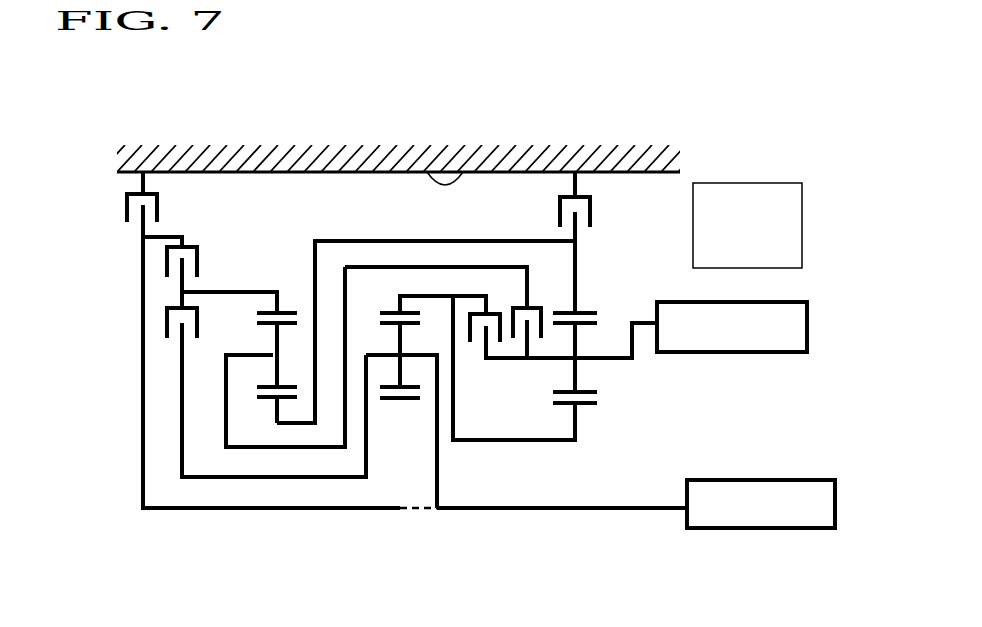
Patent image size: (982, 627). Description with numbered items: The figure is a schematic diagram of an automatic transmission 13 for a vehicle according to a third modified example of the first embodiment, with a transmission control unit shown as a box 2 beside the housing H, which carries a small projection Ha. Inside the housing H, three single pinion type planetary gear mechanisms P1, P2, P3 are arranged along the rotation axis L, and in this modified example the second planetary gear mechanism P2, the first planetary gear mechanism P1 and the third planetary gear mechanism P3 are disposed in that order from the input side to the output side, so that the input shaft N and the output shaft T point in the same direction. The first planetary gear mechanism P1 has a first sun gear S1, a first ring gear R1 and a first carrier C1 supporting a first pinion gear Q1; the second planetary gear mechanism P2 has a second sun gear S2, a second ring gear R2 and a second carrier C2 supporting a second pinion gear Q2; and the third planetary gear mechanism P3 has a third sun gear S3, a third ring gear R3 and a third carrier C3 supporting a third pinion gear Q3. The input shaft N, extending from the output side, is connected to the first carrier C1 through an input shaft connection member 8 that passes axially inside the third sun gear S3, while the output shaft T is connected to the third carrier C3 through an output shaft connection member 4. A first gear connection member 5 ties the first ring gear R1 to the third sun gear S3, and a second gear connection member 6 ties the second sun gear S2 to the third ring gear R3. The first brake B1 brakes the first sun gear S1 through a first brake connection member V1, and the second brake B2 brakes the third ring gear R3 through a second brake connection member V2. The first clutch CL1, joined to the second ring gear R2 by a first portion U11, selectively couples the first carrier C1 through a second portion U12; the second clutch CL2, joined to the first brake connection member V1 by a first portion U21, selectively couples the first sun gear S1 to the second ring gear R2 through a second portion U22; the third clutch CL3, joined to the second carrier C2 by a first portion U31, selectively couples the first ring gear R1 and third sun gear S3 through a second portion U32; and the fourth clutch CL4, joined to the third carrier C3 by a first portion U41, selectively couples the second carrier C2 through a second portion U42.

The automatic transmission 13 is at (562, 135).
The housing H is at (373, 148).
The housing projection Ha is at (463, 172).
The transmission control unit (TM-ECU) 2 is at (728, 183).
The first brake B1 is at (166, 212).
The second brake B2 is at (599, 211).
The first clutch CL1 is at (160, 324).
The second clutch CL2 is at (203, 258).
The third clutch CL3 is at (473, 350).
The fourth clutch CL4 is at (547, 310).
The first portion of first clutch connection member U11 is at (229, 291).
The second portion of first clutch connection member U12 is at (182, 388).
The first portion of second clutch connection member U21 is at (177, 235).
The second portion of second clutch connection member U22 is at (182, 283).
The first portion of third clutch connection member U31 is at (468, 296).
The second portion of third clutch connection member U32 is at (488, 348).
The first portion of fourth clutch connection member U41 is at (511, 267).
The second portion of fourth clutch connection member U42 is at (528, 339).
The first brake connection member V1 is at (143, 432).
The second brake connection member V2 is at (578, 254).
The first ring gear R1 is at (400, 308).
The second ring gear R2 is at (285, 311).
The third ring gear R3 is at (589, 313).
The first carrier C1 is at (398, 354).
The second carrier C2 is at (256, 354).
The third carrier C3 is at (587, 357).
The first pinion gear Q1 is at (400, 377).
The second pinion gear Q2 is at (272, 372).
The third pinion gear Q3 is at (579, 376).
The first sun gear S1 is at (398, 408).
The second sun gear S2 is at (276, 410).
The third sun gear S3 is at (575, 411).
The first planetary gear mechanism P1 is at (418, 412).
The second planetary gear mechanism P2 is at (287, 408).
The third planetary gear mechanism P3 is at (565, 412).
The first gear connection member 5 is at (345, 240).
The second gear connection member 6 is at (470, 441).
The output shaft connection member 4 is at (645, 322).
The input shaft connection member 8 is at (484, 509).
The rotation axis L is at (413, 510).
The output shaft T is at (704, 353).
The input shaft N is at (731, 528).